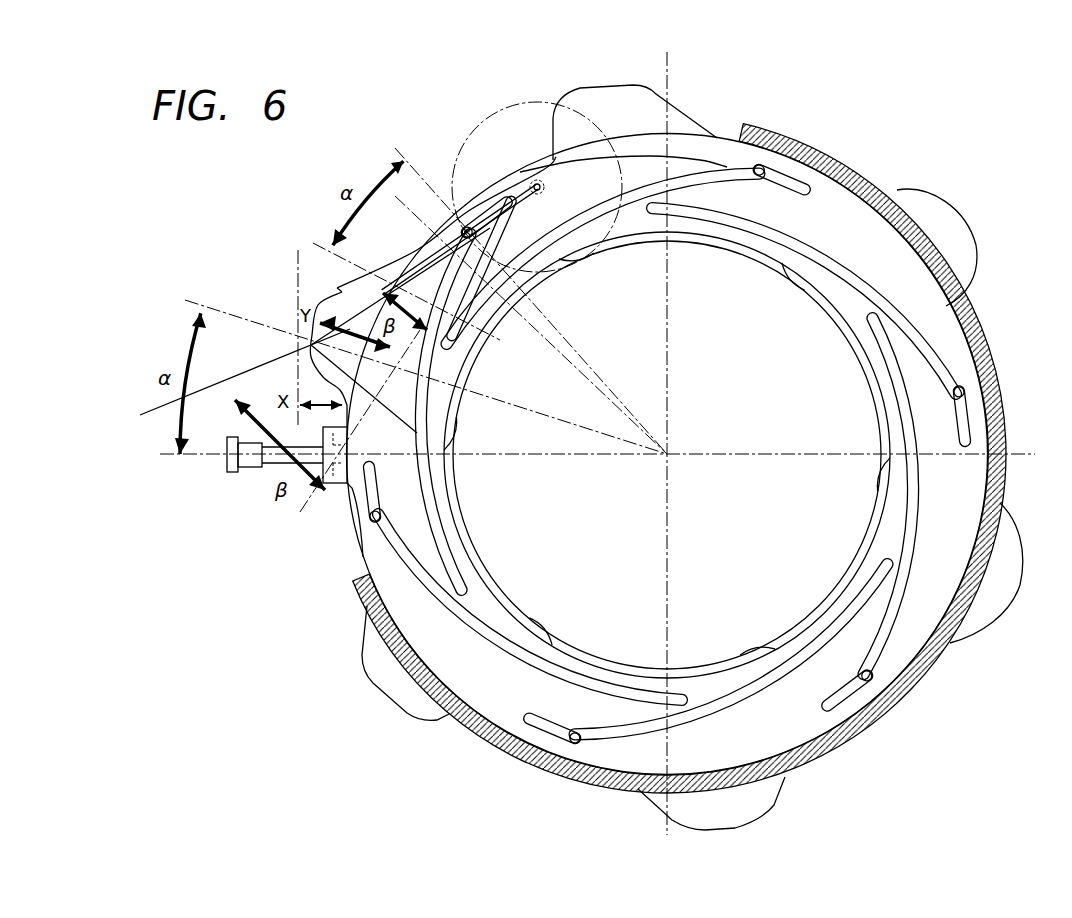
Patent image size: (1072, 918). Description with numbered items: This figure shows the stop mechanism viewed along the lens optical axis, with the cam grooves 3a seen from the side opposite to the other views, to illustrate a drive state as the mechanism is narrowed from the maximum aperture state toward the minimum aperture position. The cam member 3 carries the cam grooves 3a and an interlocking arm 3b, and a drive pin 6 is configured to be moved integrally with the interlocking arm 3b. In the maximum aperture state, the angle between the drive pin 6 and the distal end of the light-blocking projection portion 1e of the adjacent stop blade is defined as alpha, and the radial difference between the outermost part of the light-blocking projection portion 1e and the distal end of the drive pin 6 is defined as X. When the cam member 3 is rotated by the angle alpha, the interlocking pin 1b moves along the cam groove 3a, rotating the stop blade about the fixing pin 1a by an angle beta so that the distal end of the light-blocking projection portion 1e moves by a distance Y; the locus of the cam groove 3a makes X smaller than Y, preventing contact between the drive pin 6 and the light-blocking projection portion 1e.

The fixing pin 1a is at (537, 183).
The interlocking pin 1b is at (464, 227).
The light-blocking projection portion 1e is at (340, 290).
The cam member 3 is at (492, 712).
The cam groove 3a is at (402, 505).
The interlocking arm 3b is at (323, 492).
The drive pin 6 is at (250, 465).